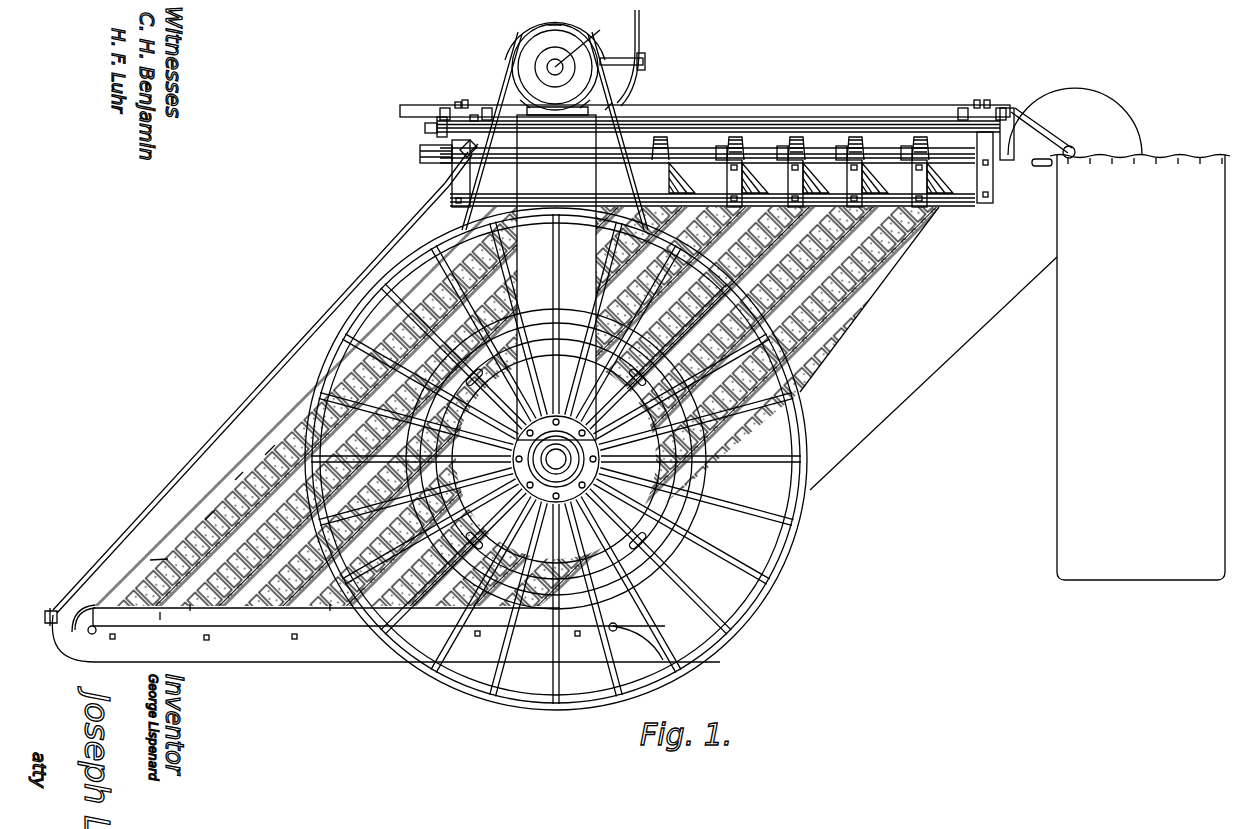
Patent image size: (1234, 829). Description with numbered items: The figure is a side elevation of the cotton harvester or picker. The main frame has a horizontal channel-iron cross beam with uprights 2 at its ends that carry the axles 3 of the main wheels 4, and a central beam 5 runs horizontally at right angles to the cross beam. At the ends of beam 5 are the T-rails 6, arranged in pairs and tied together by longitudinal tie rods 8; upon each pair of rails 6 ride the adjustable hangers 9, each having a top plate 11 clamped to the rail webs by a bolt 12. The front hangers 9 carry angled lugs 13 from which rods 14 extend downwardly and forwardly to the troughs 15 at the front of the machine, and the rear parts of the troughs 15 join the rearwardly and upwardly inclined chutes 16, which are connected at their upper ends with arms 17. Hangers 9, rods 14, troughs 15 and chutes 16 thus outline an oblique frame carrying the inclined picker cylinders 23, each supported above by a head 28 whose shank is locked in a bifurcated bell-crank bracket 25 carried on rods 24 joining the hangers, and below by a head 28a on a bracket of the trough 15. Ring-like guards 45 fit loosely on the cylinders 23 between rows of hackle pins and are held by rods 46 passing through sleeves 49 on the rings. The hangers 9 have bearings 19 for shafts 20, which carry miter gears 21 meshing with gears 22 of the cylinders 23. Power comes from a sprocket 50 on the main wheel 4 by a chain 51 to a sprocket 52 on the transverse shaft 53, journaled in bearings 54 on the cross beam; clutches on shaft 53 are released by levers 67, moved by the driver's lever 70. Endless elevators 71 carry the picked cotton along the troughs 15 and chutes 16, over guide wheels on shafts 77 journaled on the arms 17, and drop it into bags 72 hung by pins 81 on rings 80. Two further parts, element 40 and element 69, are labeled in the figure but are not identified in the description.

The uprights 2 is at (556, 273).
The axles 3 is at (556, 459).
The main wheels 4 is at (556, 459).
The beam 5 is at (705, 102).
The beams or rails 6 is at (1001, 108).
The longitudinal tie bars or rods 8 is at (895, 120).
The hangers or supports 9 is at (436, 134).
The top plate 11 is at (719, 94).
The bolt or screw 12 is at (732, 94).
The lugs or projections 13 is at (464, 173).
The rods 14 is at (232, 405).
The troughs or plates 15 is at (386, 635).
The chutes 16 is at (928, 348).
The arms or supports 17 is at (1052, 135).
The bearings 19 is at (452, 160).
The shafts 20 is at (420, 153).
The miter gears 21 is at (798, 147).
The gears 22 is at (824, 183).
The picker stems or cylinders 23 is at (555, 361).
The rods 24 is at (511, 383).
The arms, brackets or supports 25 is at (848, 178).
The cylinder heads 28 is at (946, 230).
The cylinder heads 28a is at (260, 615).
The chain link 40 is at (925, 268).
The guards 45 is at (484, 385).
The rods 46 is at (952, 244).
The sleeves or tubes 49 is at (965, 222).
The sprocket wheel 50 is at (706, 478).
The chain 51 is at (455, 213).
The sprocket wheel 52 is at (520, 50).
The shaft 53 is at (586, 43).
The bearings 54 is at (612, 100).
The levers 67 is at (646, 56).
The bracket 69 is at (646, 62).
The lever 70 is at (634, 14).
The elevators 71 is at (88, 610).
The bags or receptacles 72 is at (1140, 368).
The shafts 77 is at (1077, 150).
The rings 80 is at (1044, 168).
The pins 81 is at (1178, 166).